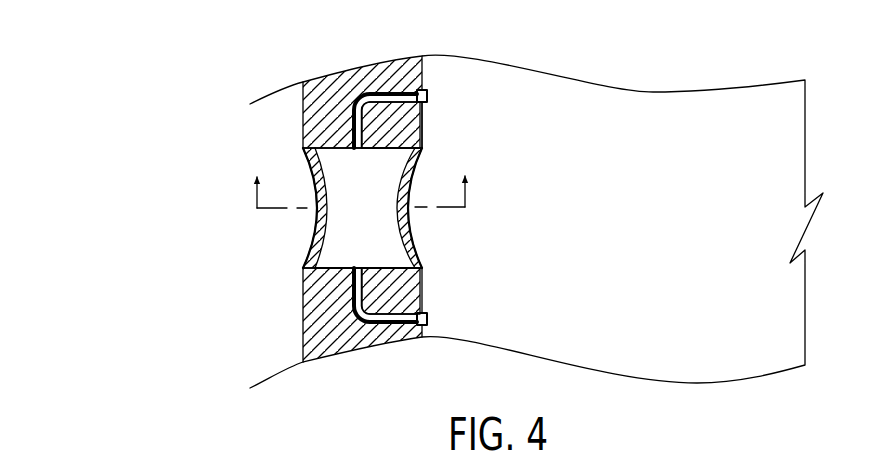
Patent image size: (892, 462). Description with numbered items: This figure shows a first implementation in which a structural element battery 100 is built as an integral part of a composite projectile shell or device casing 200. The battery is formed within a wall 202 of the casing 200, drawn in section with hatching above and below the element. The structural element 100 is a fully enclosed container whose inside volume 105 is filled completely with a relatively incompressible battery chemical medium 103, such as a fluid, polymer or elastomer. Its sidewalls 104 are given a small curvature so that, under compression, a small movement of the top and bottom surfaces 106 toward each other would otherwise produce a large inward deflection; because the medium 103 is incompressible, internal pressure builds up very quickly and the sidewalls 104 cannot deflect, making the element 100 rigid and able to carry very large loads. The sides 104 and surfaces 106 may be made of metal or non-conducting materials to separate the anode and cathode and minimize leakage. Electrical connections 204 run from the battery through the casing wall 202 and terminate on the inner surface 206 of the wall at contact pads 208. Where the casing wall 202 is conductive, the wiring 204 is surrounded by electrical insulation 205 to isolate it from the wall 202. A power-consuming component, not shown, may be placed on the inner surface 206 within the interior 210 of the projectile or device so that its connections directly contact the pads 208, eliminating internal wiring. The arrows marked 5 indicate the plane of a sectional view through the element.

The section line 5- 5 is at (363, 194).
The structural element battery 100 is at (376, 208).
The medium 103 is at (387, 250).
The sidewalls 104 is at (314, 238).
The inside volume 105 is at (378, 218).
The top and bottom surfaces 106 is at (405, 131).
The composite projectile shell or device casing 200 is at (282, 118).
The casing wall 202 is at (302, 316).
The electrical connections 204 is at (384, 89).
The electrical insulation 205 is at (358, 100).
The inner surface 206 is at (421, 135).
The contact pads 208 is at (429, 95).
The interior 210 is at (673, 239).